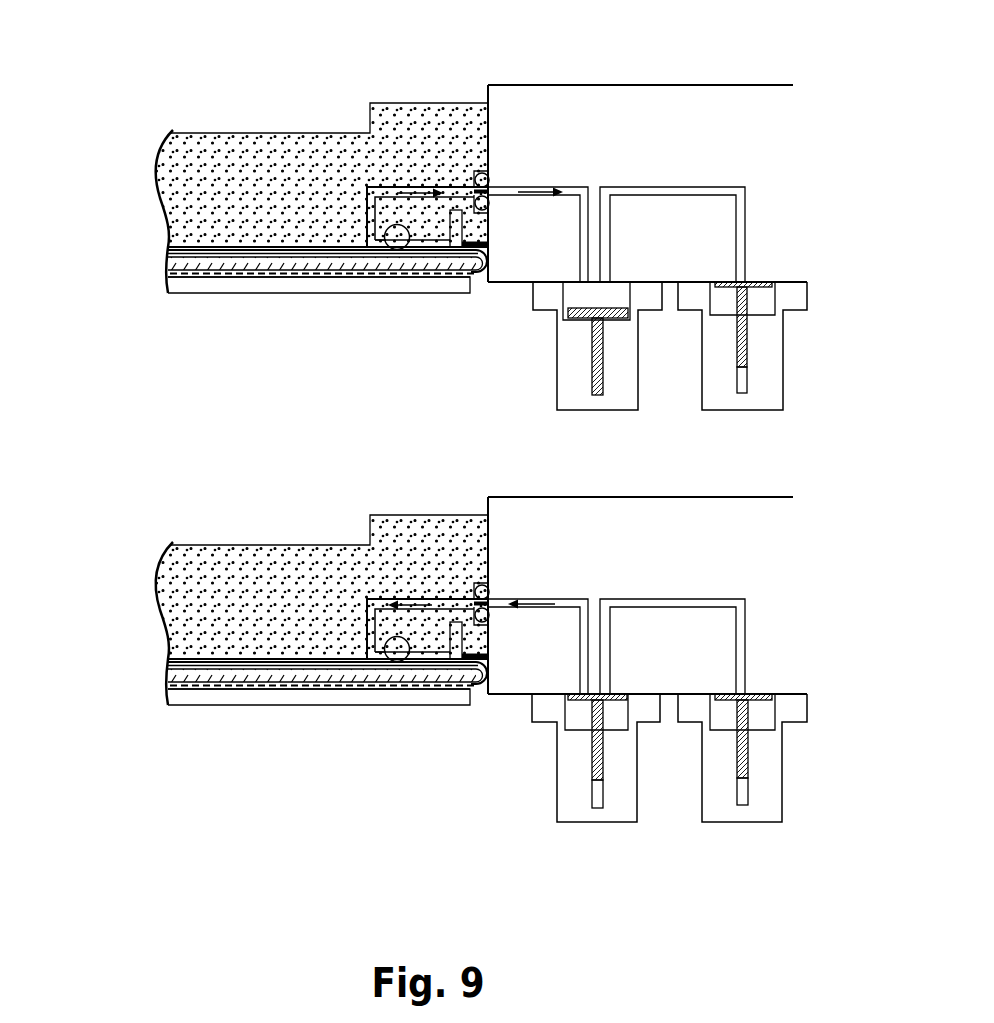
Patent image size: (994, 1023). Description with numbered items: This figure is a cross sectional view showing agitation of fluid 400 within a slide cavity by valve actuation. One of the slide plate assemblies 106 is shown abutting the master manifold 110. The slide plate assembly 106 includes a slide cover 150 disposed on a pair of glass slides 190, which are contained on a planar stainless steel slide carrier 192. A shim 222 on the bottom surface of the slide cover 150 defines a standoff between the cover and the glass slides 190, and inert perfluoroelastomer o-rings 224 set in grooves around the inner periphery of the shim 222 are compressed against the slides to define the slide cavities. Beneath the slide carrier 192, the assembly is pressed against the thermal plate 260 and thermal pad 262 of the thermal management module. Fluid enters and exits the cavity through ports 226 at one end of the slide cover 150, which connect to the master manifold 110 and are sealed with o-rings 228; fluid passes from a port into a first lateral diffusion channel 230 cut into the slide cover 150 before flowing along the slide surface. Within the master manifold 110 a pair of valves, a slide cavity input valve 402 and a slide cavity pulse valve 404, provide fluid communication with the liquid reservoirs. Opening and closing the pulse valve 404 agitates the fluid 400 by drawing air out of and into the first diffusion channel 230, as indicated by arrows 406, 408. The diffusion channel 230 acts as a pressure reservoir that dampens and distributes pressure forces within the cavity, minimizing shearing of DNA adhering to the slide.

The slide plate assembly 106 is at (137, 158).
The master manifold 110 is at (725, 92).
The slide cover 150 is at (217, 143).
The glass slides 190 is at (163, 258).
The slide carrier 192 is at (163, 268).
The shim 222 is at (434, 245).
The o-rings 224 is at (393, 250).
The ports 226 is at (492, 185).
The o-rings 228 is at (488, 205).
The first lateral diffusion channel 230 is at (375, 245).
The thermal plate 260 is at (242, 287).
The thermal pad 262 is at (198, 278).
The fluid 400 is at (163, 248).
The slide cavity input valve 402 is at (783, 362).
The slide cavity pulse valve 404 is at (555, 365).
The arrow 406 is at (547, 188).
The arrow 408 is at (547, 600).